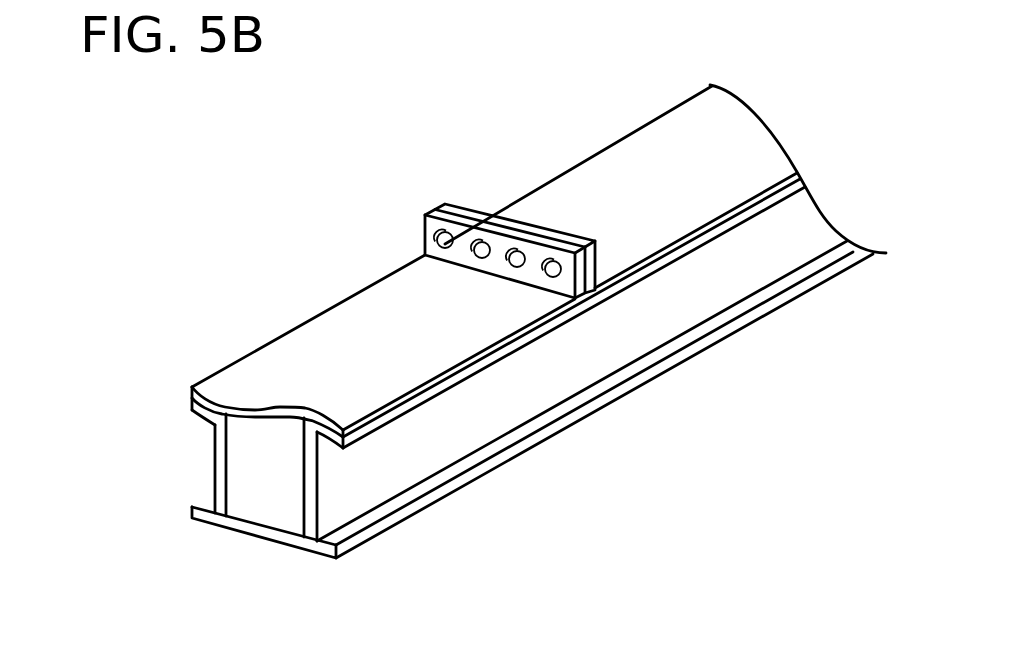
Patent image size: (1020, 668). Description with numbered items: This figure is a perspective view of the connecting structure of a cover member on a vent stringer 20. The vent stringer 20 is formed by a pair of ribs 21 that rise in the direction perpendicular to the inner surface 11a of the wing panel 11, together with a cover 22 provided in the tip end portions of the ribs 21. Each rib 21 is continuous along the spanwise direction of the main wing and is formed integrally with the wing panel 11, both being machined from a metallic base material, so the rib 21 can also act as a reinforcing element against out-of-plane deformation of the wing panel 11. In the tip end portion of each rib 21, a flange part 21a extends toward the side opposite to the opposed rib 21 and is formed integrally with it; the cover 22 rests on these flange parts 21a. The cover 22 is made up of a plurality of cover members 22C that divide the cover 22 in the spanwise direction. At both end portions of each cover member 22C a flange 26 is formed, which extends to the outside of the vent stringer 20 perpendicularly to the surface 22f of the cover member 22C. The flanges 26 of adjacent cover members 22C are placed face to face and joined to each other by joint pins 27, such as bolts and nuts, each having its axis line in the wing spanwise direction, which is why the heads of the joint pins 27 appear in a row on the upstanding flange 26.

The vent stringer 20 is at (277, 294).
The cover 22 is at (353, 318).
The surface of the cover member 22f is at (248, 366).
The cover member 22C is at (398, 283).
The rib 21 is at (220, 476).
The flange part 21a is at (552, 330).
The wing panel 11 is at (270, 540).
The inner surface of the wing panel 11a is at (290, 528).
The flange 26 is at (432, 212).
The joint pin 27 is at (477, 259).